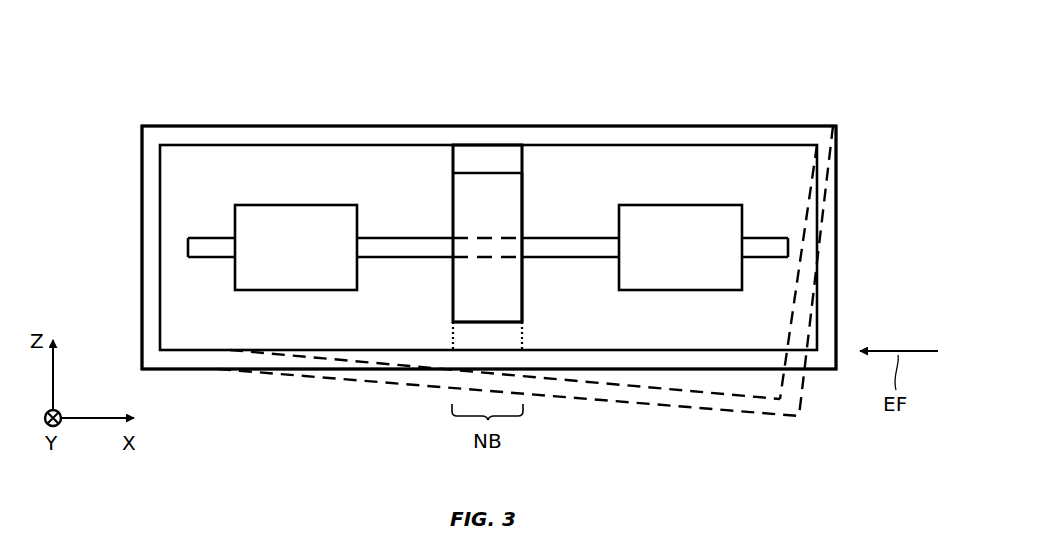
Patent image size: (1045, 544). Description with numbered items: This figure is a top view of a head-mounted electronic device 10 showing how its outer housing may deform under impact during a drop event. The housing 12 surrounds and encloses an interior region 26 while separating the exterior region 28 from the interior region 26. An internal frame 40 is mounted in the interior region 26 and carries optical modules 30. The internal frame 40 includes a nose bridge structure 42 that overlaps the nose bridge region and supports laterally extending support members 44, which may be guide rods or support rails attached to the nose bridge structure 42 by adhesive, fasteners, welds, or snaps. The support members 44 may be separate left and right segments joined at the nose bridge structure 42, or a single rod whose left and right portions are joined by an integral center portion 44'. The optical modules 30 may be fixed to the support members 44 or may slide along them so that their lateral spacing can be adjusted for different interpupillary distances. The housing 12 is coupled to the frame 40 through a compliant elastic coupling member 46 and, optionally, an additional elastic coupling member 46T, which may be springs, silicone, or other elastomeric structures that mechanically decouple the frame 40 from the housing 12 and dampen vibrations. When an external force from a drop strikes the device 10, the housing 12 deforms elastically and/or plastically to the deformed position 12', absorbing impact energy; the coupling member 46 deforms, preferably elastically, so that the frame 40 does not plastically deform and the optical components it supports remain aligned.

The device 10 is at (822, 64).
The housing 12 is at (526, 247).
The deformed position 12' is at (525, 303).
The interior region 26 is at (290, 174).
The exterior region 28 is at (420, 64).
The optical modules 30 is at (293, 291).
The internal frame 40 is at (567, 172).
The nose bridge structure 42 is at (512, 207).
The laterally extending support members 44 is at (488, 275).
The center portion 44' is at (460, 216).
The elastic coupling member 46 is at (522, 168).
The elastic coupling member 46T is at (512, 337).